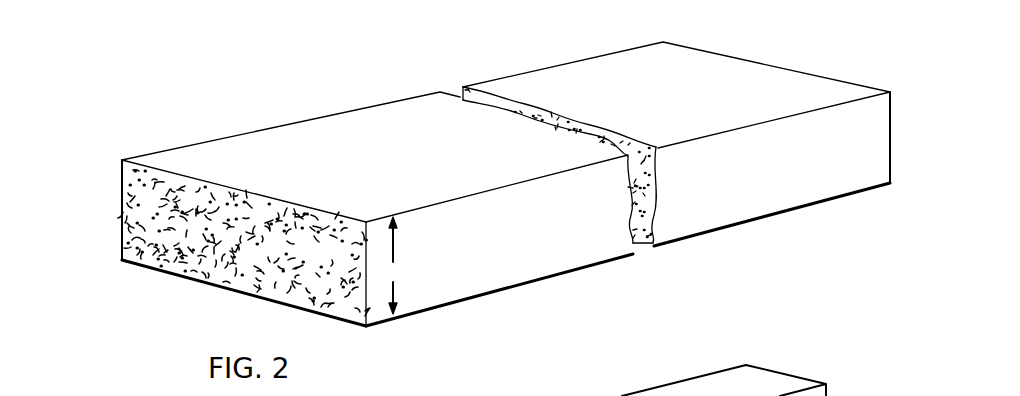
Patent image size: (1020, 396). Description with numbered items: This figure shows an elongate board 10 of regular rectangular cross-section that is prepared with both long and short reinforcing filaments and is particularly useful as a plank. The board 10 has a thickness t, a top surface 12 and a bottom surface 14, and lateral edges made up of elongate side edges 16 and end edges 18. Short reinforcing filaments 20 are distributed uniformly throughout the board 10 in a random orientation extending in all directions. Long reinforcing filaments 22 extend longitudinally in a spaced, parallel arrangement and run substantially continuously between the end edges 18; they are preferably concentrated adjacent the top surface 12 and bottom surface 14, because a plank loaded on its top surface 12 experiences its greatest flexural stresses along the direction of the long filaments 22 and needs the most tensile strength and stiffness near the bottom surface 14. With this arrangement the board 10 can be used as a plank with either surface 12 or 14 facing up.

The board 10 is at (335, 98).
The top surface 12 is at (726, 70).
The bottom surface 14 is at (640, 247).
The side edges 16 is at (804, 162).
The end edges 18 is at (830, 78).
The short reinforcing filaments 20 is at (200, 277).
The long reinforcing filaments 22 is at (122, 175).
The thickness t is at (393, 265).